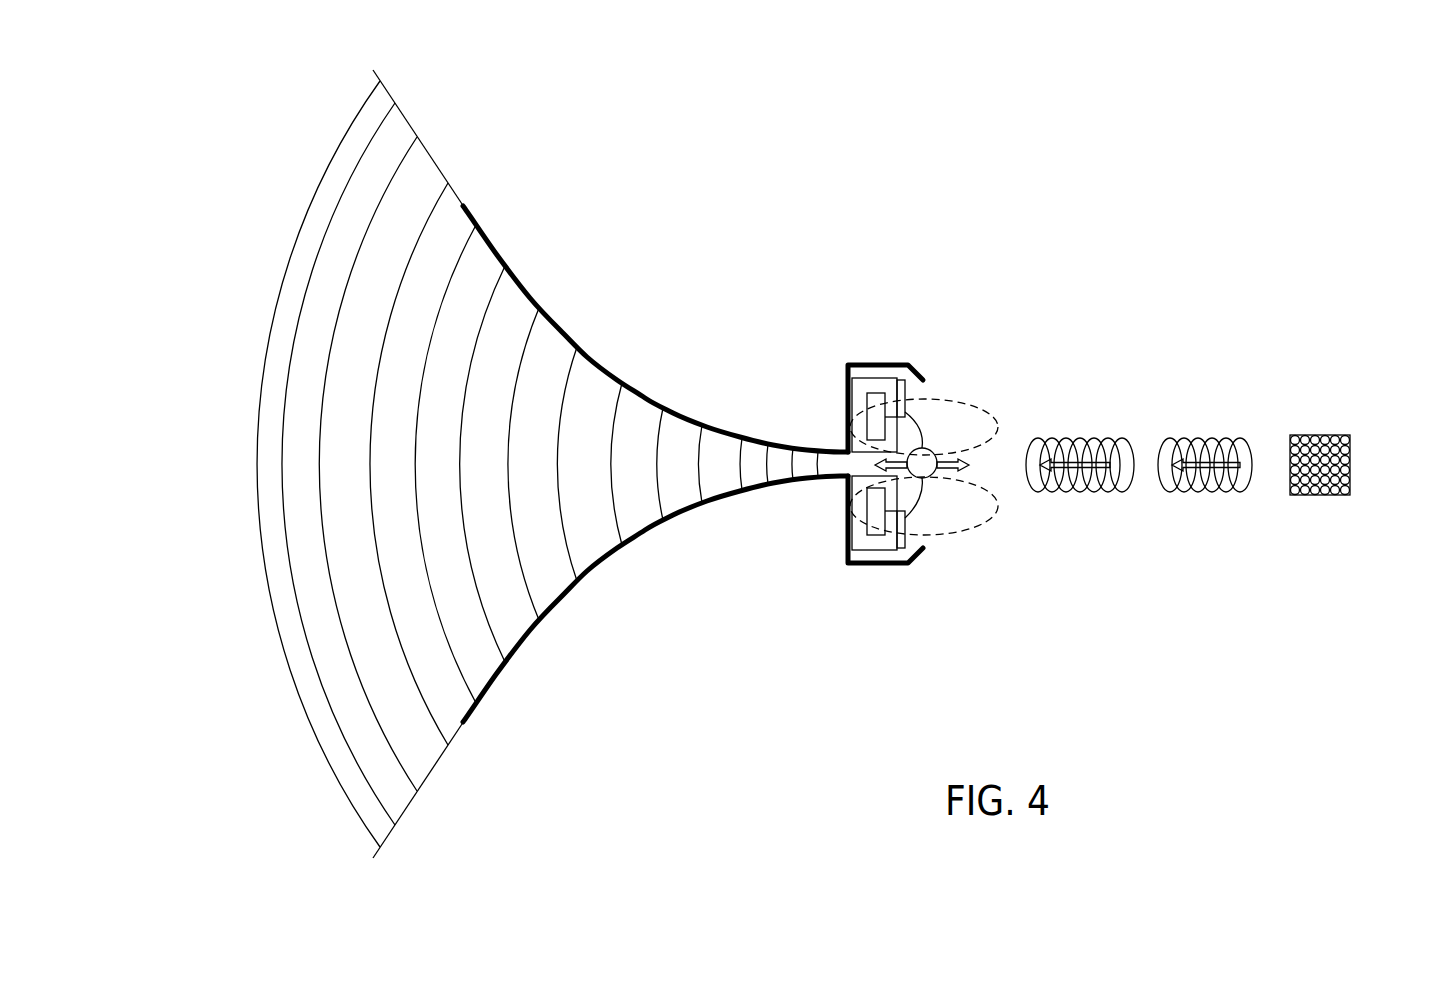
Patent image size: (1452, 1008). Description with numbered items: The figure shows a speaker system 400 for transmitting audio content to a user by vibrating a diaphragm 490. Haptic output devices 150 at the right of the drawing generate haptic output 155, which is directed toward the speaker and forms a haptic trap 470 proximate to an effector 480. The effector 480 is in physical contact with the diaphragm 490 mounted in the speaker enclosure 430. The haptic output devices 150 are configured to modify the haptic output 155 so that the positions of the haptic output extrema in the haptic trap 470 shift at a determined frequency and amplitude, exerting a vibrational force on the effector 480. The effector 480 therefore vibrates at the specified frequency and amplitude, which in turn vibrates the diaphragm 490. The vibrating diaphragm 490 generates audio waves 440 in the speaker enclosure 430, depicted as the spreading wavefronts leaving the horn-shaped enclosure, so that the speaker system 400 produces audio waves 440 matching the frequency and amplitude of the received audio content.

The system 400 is at (1196, 177).
The audio waves 440 is at (455, 394).
The speaker enclosure 430 is at (587, 573).
The diaphragm 490 is at (908, 410).
The effector 480 is at (922, 462).
The haptic trap 470 is at (993, 443).
The haptic output 155 is at (1103, 438).
The haptic output devices 150 is at (1337, 633).